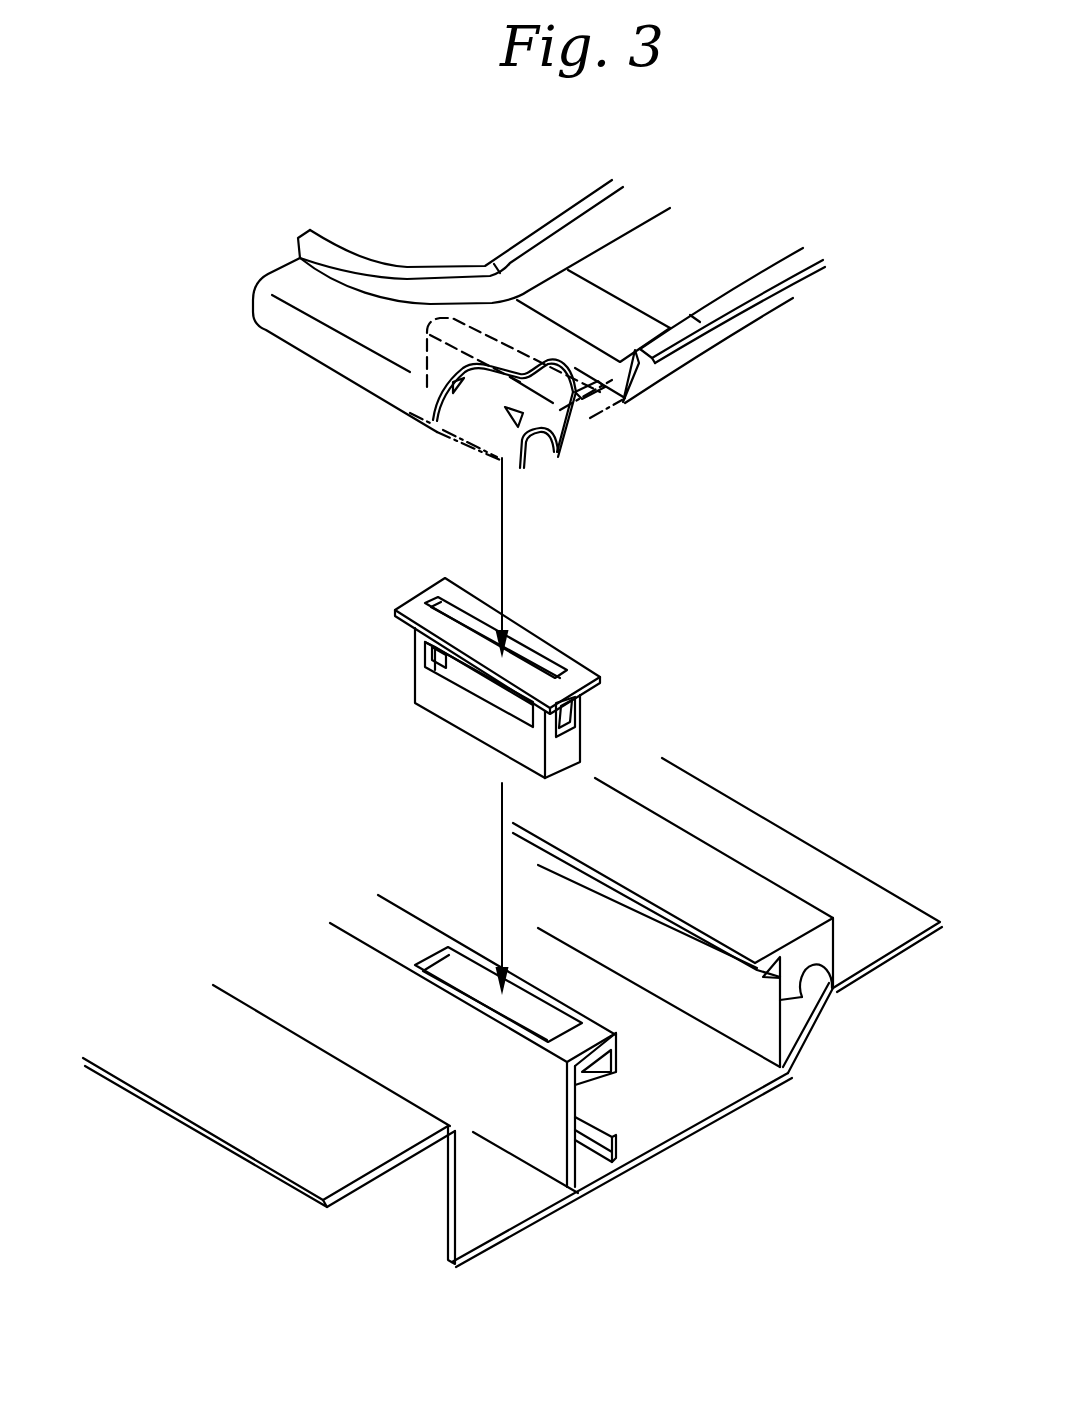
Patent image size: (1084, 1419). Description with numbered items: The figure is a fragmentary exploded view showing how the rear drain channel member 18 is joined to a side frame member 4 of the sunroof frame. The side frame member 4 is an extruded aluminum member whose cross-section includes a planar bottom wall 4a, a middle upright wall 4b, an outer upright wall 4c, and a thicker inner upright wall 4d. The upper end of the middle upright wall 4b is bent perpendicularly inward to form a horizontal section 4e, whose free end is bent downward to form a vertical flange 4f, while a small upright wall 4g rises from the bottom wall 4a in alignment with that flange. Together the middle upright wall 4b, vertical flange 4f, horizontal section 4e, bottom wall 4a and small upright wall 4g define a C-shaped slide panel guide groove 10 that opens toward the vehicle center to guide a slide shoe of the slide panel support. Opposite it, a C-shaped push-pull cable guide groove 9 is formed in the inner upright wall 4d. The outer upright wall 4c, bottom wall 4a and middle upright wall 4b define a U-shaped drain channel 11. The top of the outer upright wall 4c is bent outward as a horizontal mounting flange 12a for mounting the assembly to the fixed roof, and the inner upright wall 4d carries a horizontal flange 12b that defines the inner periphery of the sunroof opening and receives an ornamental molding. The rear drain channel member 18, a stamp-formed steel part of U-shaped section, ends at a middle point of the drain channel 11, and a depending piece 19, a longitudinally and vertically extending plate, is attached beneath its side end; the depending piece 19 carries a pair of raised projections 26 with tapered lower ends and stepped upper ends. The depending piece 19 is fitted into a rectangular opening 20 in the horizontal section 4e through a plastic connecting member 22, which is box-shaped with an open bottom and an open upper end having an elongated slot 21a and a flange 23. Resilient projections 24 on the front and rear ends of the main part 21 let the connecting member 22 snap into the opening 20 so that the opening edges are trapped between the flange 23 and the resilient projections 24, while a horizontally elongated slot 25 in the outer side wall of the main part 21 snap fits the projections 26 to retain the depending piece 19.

The rear drain channel member 18 is at (606, 188).
The depending piece 19 is at (548, 443).
The projections 26 is at (507, 407).
The main part 21 is at (508, 697).
The elongated slot 21a is at (557, 667).
The connecting member 22 is at (458, 735).
The flange 23 is at (540, 645).
The resilient projection 24 is at (573, 718).
The horizontally elongated slot 25 is at (447, 657).
The rectangular opening 20 is at (545, 1026).
The side frame member 4 is at (524, 1048).
The bottom wall 4a is at (683, 1098).
The middle upright wall 4b is at (547, 1165).
The outer upright wall 4c is at (447, 1197).
The inner upright wall 4d is at (800, 1030).
The horizontal section 4e is at (504, 978).
The vertical flange 4f is at (618, 1058).
The small upright wall 4g is at (602, 1160).
The push-pull cable guide groove 9 is at (813, 965).
The slide panel guide groove 10 is at (603, 1103).
The drain channel 11 is at (502, 1187).
The horizontal mounting flange 12a is at (253, 1140).
The horizontal flange 12b is at (835, 872).